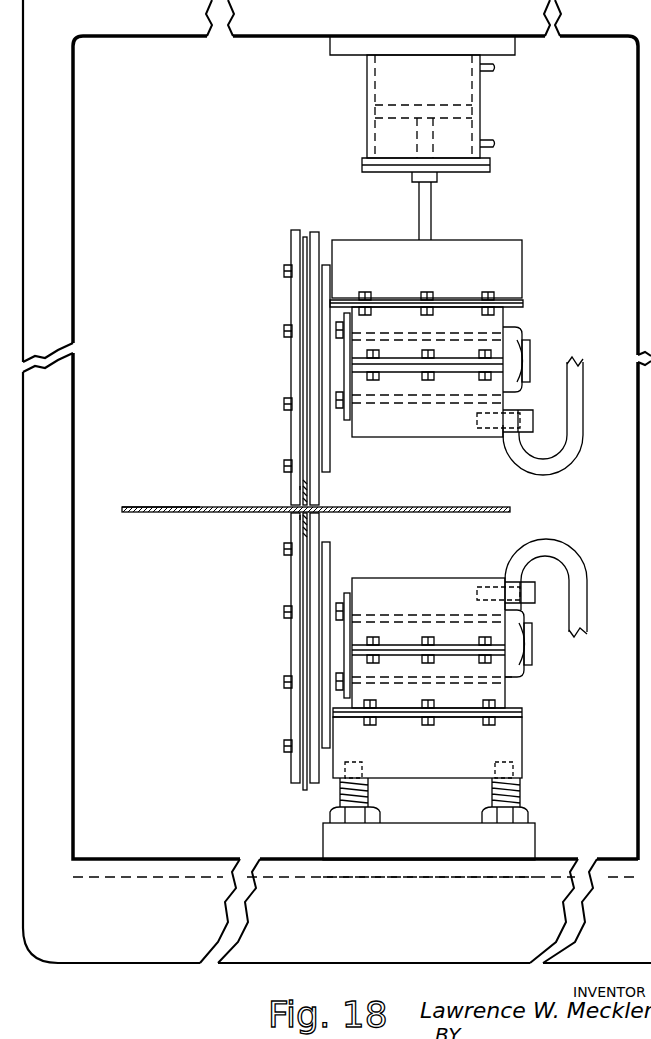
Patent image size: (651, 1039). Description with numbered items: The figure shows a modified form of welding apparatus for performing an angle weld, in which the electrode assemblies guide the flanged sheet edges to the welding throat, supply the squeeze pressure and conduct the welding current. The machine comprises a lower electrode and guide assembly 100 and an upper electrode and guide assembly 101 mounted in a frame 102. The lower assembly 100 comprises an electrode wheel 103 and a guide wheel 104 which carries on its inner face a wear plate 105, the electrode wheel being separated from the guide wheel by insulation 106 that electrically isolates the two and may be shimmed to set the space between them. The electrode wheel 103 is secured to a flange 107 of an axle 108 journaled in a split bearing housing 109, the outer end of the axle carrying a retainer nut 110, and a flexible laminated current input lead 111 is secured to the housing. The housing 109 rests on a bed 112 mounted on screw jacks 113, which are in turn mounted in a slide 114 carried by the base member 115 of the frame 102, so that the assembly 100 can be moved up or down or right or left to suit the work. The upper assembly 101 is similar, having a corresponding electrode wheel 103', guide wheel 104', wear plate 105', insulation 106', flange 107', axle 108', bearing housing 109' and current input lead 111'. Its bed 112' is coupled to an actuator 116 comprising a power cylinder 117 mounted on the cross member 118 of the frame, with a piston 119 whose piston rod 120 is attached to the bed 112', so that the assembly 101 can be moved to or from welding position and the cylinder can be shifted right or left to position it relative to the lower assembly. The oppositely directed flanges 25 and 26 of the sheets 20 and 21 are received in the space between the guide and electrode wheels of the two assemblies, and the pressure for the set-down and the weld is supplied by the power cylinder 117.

The sheet 20 is at (481, 506).
The sheet 21 is at (186, 506).
The flange 25 is at (305, 520).
The flange 26 is at (302, 488).
The electrode and guide assembly 100 is at (309, 661).
The electrode and guide assembly 101 is at (322, 367).
The frame 102 is at (626, 230).
The electrode wheel 103 is at (346, 648).
The electrode wheel 103' is at (290, 368).
The guide wheel 104 is at (288, 645).
The guide wheel 104' is at (356, 384).
The wear plate 105 is at (268, 661).
The wear plate 105' is at (356, 371).
The insulation 106 is at (270, 648).
The insulation 106' is at (268, 367).
The flange 107 is at (362, 621).
The flange 107' is at (361, 340).
The axle 108 is at (545, 643).
The axle 108' is at (548, 359).
The split bearing housing 109 is at (428, 628).
The split bearing housing 109' is at (470, 372).
The retainer nut 110 is at (514, 680).
The flexible laminated current input lead 111 is at (556, 587).
The flexible laminated current input lead 111' is at (559, 416).
The bed 112 is at (427, 739).
The bed 112' is at (426, 277).
The screw jacks 113 is at (370, 793).
The slide 114 is at (445, 851).
The base member 115 is at (455, 920).
The actuator 116 is at (443, 118).
The power cylinder 117 is at (482, 92).
The cross member 118 is at (311, 24).
The piston 119 is at (485, 112).
The piston rod 120 is at (432, 198).